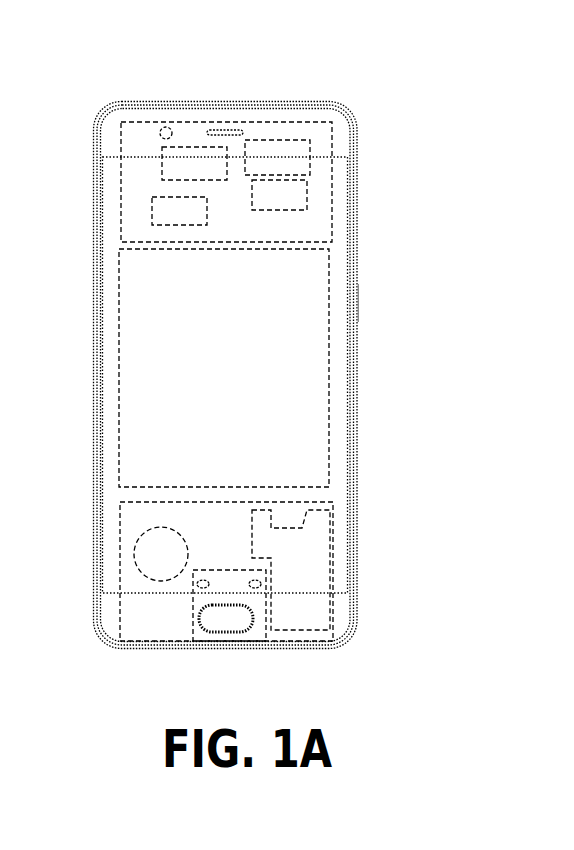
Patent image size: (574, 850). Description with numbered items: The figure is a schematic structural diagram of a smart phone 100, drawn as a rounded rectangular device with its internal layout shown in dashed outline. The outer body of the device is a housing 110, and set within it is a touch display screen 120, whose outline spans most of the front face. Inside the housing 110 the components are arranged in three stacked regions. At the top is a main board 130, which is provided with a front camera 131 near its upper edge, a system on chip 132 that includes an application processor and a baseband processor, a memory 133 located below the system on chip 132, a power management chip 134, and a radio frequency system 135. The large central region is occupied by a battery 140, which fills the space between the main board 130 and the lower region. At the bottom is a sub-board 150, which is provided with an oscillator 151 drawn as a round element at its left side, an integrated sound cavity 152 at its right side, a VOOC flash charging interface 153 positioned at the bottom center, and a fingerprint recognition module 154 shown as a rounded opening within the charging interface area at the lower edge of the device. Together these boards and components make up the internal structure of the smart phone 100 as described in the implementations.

The smart phone 100 is at (268, 44).
The housing 110 is at (349, 114).
The touch display screen 120 is at (342, 343).
The main board 130 is at (332, 152).
The front camera 131 is at (167, 127).
The system on chip 132 is at (302, 140).
The memory 133 is at (308, 192).
The power management chip 134 is at (152, 205).
The radio frequency system 135 is at (162, 149).
The battery 140 is at (285, 305).
The sub-board 150 is at (331, 502).
The oscillator 151 is at (134, 555).
The integrated sound cavity 152 is at (311, 541).
The VOOC flash charging interface 153 is at (255, 642).
The fingerprint recognition module 154 is at (198, 628).